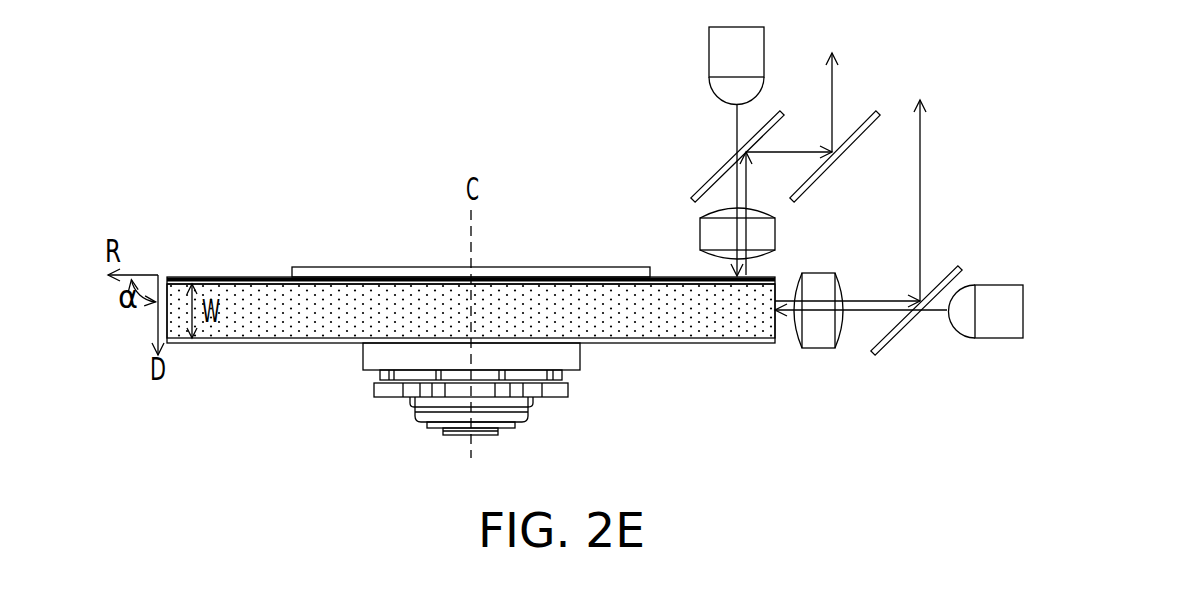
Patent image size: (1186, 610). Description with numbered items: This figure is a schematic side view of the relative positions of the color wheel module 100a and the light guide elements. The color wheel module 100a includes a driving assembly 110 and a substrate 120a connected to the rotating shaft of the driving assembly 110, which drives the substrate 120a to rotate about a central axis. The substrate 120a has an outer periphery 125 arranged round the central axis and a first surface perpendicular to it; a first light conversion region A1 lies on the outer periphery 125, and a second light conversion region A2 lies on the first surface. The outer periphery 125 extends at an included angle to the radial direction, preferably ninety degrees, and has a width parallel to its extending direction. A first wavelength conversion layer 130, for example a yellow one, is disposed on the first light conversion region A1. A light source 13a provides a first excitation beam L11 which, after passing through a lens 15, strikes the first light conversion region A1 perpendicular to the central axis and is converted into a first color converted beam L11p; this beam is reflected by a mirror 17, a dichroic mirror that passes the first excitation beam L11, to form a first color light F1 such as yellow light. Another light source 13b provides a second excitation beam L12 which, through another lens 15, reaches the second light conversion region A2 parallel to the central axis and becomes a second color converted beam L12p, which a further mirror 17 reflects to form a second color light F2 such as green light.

The color wheel module 100a is at (273, 220).
The driving assembly 110 is at (557, 357).
The substrate 120a is at (297, 343).
The outer periphery 125 is at (718, 320).
The first wavelength conversion layer 130 is at (645, 322).
The light source 13a is at (1000, 322).
The light source 13b is at (720, 53).
The lens 15 is at (707, 233).
The mirror 17 is at (775, 117).
The first excitation beam L11 is at (872, 315).
The first color converted beam L11p is at (875, 300).
The second excitation beam L12 is at (737, 133).
The second color converted beam L12p is at (747, 192).
The first color light F1 is at (923, 183).
The second color light F2 is at (833, 86).
The first light conversion region A1 is at (535, 307).
The second light conversion region A2 is at (682, 275).